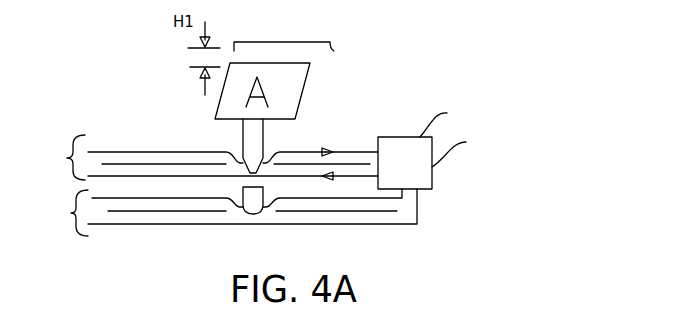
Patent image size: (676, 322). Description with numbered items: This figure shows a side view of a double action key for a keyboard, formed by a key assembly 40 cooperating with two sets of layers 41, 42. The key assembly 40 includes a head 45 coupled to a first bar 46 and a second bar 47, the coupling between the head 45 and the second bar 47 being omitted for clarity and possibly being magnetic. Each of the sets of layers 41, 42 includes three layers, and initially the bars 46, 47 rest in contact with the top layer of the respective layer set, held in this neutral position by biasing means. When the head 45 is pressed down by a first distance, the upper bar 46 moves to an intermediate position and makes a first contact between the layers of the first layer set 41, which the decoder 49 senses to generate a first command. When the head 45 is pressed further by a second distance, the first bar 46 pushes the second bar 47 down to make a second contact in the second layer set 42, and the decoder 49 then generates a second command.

The key assembly 40 is at (164, 112).
The first set of layers 41 is at (67, 159).
The second set of layers 42 is at (71, 212).
The head 45 is at (303, 91).
The first bar 46 is at (265, 148).
The second bar 47 is at (250, 210).
The decoder 49 is at (432, 184).